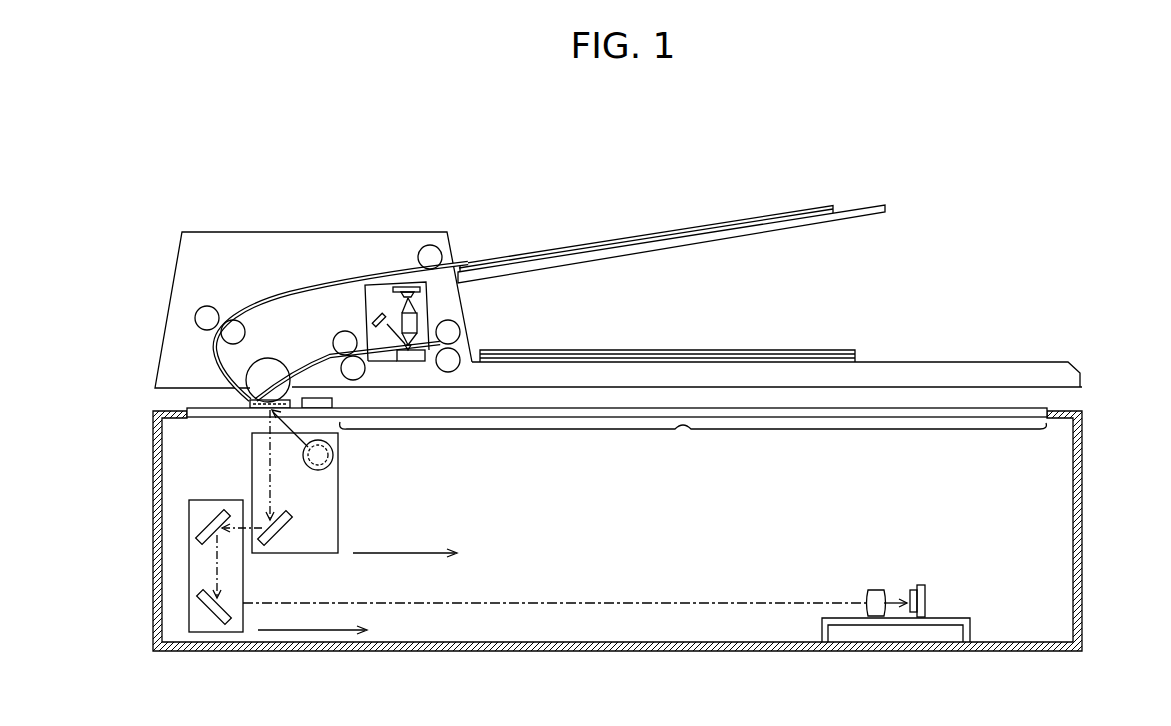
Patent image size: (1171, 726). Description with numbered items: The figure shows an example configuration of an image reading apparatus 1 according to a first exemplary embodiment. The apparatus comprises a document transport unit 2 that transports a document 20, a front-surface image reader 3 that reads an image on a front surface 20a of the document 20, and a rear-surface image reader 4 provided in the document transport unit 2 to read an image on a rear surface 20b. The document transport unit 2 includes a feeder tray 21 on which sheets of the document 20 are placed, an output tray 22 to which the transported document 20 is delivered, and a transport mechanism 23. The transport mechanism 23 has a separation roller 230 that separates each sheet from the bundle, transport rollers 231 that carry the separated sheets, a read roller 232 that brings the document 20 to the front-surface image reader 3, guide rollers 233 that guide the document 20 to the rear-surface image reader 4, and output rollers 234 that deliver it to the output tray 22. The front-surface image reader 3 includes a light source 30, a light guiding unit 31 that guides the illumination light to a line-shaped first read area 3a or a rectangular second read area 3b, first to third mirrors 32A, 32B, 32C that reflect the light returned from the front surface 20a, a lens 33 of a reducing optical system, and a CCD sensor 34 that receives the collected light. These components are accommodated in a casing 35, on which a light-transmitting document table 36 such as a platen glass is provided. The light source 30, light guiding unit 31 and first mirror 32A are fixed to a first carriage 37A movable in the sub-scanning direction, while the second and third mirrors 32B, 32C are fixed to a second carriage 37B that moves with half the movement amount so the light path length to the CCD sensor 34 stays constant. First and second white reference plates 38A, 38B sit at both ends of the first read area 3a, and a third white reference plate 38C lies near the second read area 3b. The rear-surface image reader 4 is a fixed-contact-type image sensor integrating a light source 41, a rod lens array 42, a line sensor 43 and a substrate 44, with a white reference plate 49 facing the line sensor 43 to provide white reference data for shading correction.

The image reading apparatus 1 is at (990, 122).
The document transport unit 2 is at (134, 181).
The front-surface image reader 3 is at (126, 433).
The first read area 3a is at (265, 412).
The second read area 3b is at (693, 441).
The rear-surface image reader 4 is at (414, 285).
The document 20 is at (796, 203).
The front surface 20a is at (342, 368).
The rear surface 20b is at (270, 378).
The feeder tray 21 is at (877, 207).
The output tray 22 is at (976, 366).
The transport mechanism 23 is at (245, 241).
The separation roller 230 is at (430, 245).
The transport rollers 231 is at (222, 332).
The read roller 232 is at (248, 372).
The guide rollers 233 is at (337, 335).
The output rollers 234 is at (462, 335).
The light source 30 is at (517, 551).
The light guiding unit 31 is at (330, 468).
The first mirror 32A is at (278, 542).
The second mirror 32B is at (195, 527).
The third mirror 32C is at (196, 597).
The lens 33 is at (878, 590).
The CCD sensor 34 is at (917, 588).
The casing 35 is at (1083, 480).
The document table 36 is at (1032, 409).
The first carriage 37A is at (330, 553).
The second carriage 37B is at (232, 632).
The first white reference plate 38A is at (250, 402).
The second white reference plate 38B is at (317, 403).
The third white reference plate 38C is at (345, 455).
The light source 41 is at (373, 316).
The rod lens array 42 is at (418, 322).
The line sensor 43 is at (420, 290).
The substrate 44 is at (401, 287).
The white reference plate 49 is at (400, 361).